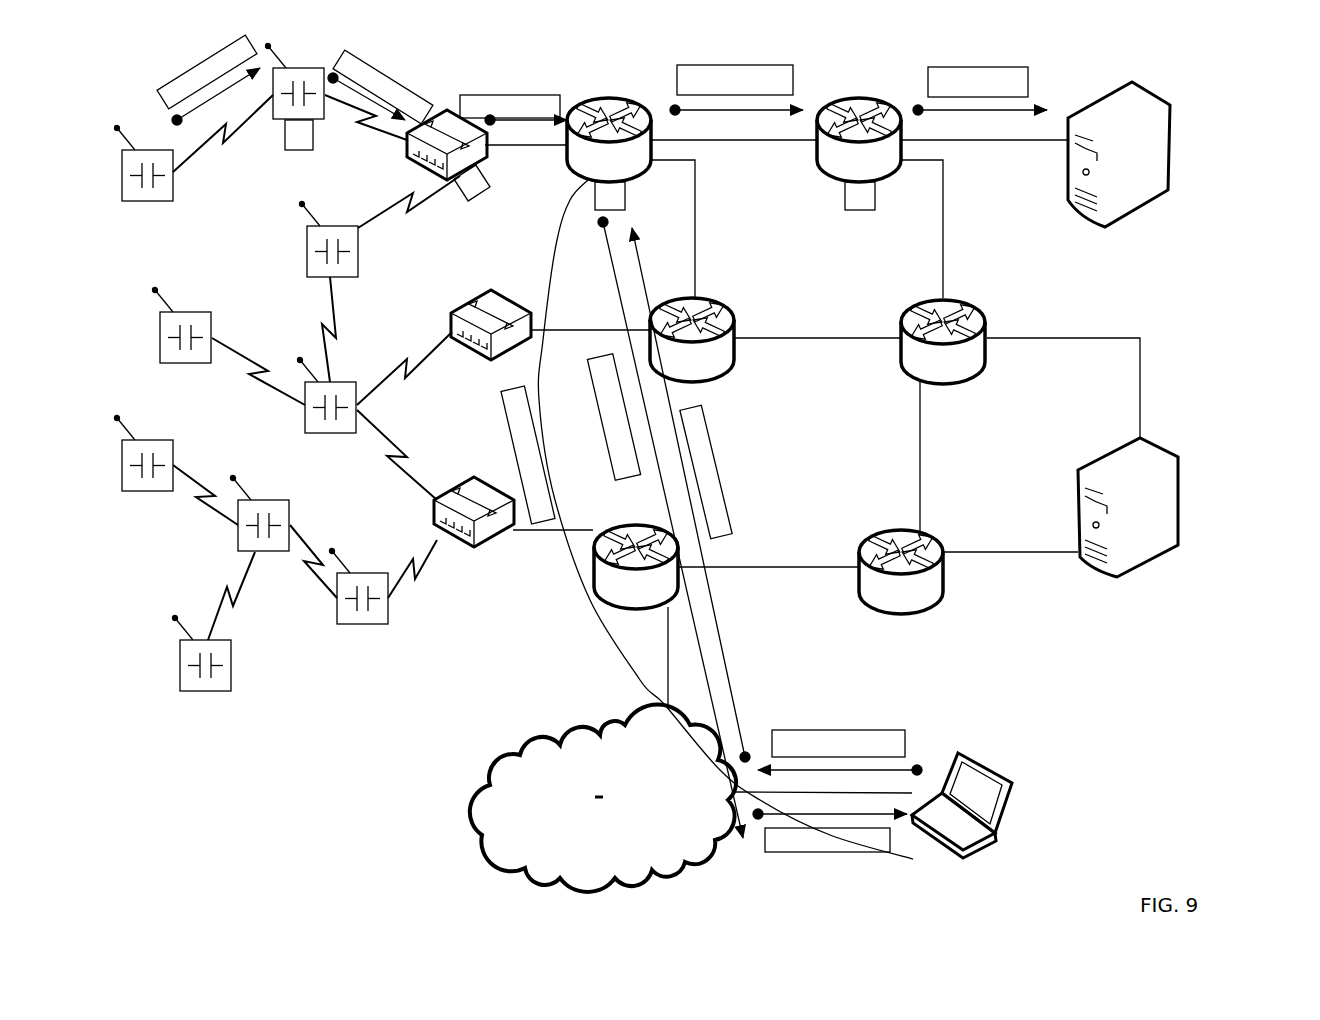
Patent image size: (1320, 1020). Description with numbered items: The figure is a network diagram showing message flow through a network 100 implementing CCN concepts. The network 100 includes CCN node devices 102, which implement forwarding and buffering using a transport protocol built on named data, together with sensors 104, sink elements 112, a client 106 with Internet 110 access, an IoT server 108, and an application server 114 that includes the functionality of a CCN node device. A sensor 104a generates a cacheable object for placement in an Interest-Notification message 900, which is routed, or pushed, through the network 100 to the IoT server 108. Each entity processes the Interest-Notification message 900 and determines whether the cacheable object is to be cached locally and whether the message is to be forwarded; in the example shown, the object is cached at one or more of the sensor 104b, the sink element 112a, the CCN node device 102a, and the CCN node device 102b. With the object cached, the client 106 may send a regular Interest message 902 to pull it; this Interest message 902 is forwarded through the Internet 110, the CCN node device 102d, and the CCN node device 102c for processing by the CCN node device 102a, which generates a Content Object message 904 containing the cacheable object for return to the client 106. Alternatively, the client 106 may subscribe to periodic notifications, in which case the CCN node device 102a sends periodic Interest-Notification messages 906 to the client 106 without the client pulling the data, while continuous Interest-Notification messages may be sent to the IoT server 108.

The network 100 is at (1178, 720).
The CCN node device 102 is at (975, 378).
The CCN node device 102a is at (615, 95).
The CCN node device 102b is at (867, 95).
The CCN node device 102c is at (737, 318).
The CCN node device 102d is at (635, 607).
The sensor 104 is at (195, 312).
The sensor 104a is at (150, 202).
The sensor 104b is at (300, 68).
The client 106 is at (1010, 790).
The IoT server 108 is at (1170, 153).
The Internet 110 is at (520, 758).
The sink element 112 is at (490, 292).
The sink element 112a is at (447, 110).
The application server 114 is at (1180, 505).
The Interest-Notification message 900 is at (205, 65).
The Interest message 902 is at (725, 470).
The Content Object message 904 is at (618, 440).
The periodic Interest-Notification message 906 is at (503, 440).